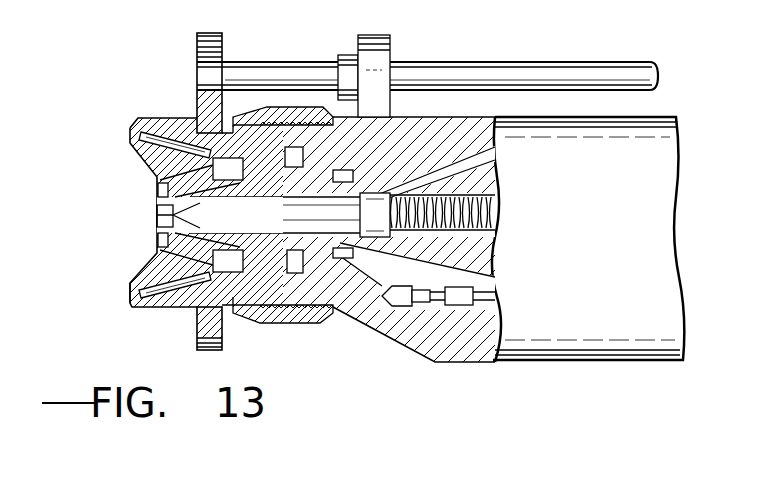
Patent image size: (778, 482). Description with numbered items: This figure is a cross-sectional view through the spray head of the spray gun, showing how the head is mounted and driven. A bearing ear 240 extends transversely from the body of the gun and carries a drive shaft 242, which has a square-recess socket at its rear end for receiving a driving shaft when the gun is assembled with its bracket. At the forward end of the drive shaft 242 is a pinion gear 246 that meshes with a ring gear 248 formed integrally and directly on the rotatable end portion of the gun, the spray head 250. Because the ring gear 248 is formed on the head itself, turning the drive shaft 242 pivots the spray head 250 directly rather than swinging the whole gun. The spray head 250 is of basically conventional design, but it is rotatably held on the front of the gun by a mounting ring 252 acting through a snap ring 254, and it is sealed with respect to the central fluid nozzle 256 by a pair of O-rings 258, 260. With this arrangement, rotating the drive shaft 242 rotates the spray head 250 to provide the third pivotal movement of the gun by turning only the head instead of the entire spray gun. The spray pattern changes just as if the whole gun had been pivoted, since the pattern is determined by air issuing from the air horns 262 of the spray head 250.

The bearing ear 240 is at (390, 50).
The drive shaft 242 is at (500, 62).
The pinion gear 246 is at (197, 42).
The ring gear 248 is at (200, 358).
The spray head 250 is at (145, 310).
The mounting ring 252 is at (325, 317).
The snap ring 254 is at (236, 305).
The central fluid nozzle 256 is at (158, 237).
The O-ring 258 is at (280, 140).
The O-ring 260 is at (203, 165).
The air horns 262 is at (153, 160).